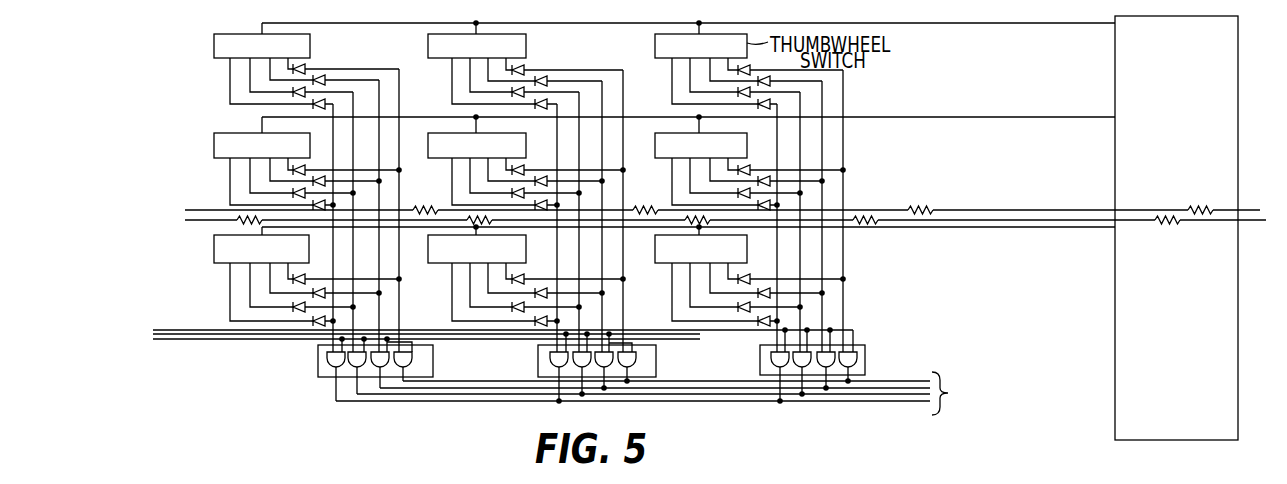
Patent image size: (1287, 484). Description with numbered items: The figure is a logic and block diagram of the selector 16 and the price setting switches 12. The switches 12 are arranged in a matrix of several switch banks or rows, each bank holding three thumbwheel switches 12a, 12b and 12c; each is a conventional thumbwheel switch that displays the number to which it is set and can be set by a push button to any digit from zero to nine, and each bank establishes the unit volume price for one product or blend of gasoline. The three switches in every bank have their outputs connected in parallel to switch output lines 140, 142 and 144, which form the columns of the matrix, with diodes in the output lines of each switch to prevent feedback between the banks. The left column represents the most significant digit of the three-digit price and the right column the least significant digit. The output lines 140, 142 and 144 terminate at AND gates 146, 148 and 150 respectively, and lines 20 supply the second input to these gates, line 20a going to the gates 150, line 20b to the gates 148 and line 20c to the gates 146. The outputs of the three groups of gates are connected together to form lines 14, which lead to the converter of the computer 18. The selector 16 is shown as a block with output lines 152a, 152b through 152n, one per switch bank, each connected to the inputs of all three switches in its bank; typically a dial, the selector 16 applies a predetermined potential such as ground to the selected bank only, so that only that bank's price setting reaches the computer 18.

The price setting switches 12 is at (147, 195).
The thumbwheel switch 12a is at (214, 41).
The thumbwheel switch 12b is at (428, 41).
The thumbwheel switch 12c is at (653, 43).
The lines 14 is at (887, 390).
The selector 16 is at (1238, 185).
The computer 18 is at (1010, 398).
The lines 20 is at (183, 340).
The line 20a is at (677, 332).
The line 20b is at (450, 332).
The line 20c is at (281, 342).
The switch output lines 140 is at (332, 267).
The switch output lines 142 is at (556, 267).
The switch output lines 144 is at (777, 256).
The AND gates 146 is at (333, 378).
The AND gates 148 is at (538, 363).
The AND gates 150 is at (760, 360).
The output line 152a is at (1005, 24).
The output line 152b is at (1002, 118).
The output line 152n is at (1007, 228).